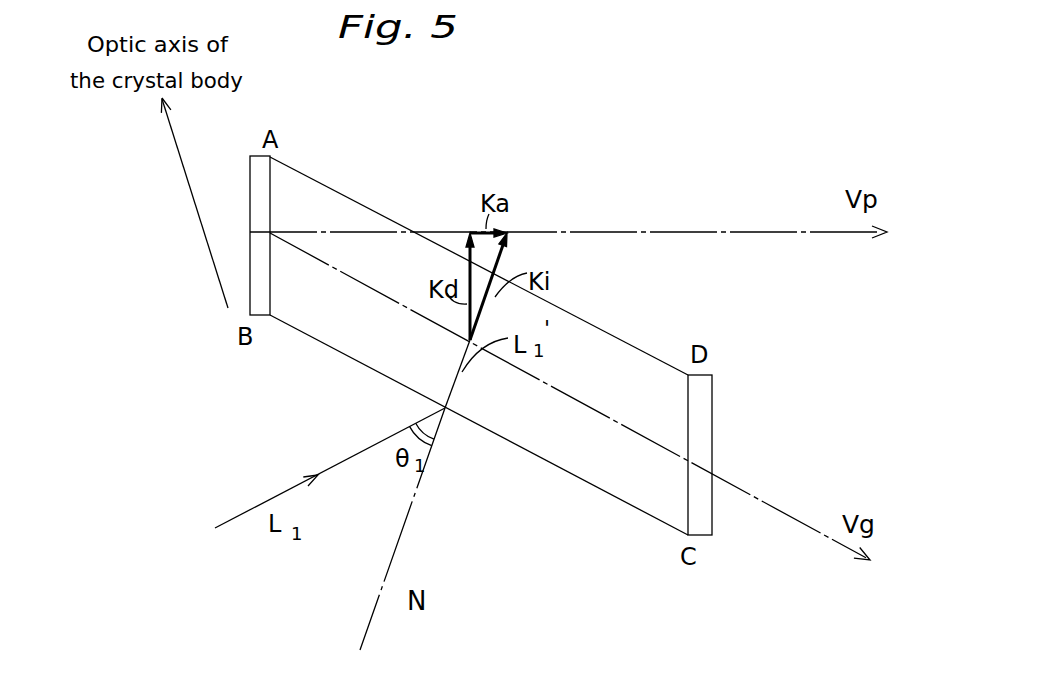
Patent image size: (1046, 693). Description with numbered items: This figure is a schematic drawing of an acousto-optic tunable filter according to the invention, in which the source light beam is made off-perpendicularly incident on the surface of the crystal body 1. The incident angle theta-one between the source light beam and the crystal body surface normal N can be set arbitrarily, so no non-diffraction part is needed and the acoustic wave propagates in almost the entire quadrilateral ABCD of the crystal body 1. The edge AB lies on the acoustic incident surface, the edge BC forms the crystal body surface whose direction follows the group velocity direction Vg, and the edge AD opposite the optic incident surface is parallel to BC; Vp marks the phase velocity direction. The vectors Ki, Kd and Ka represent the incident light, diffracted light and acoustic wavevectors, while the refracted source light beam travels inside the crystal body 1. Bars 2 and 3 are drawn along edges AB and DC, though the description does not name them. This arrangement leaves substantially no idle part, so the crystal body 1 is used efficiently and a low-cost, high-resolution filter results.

The crystal body 1 is at (364, 204).
The incident-side electrode 2 is at (250, 233).
The exit-side electrode 3 is at (702, 437).